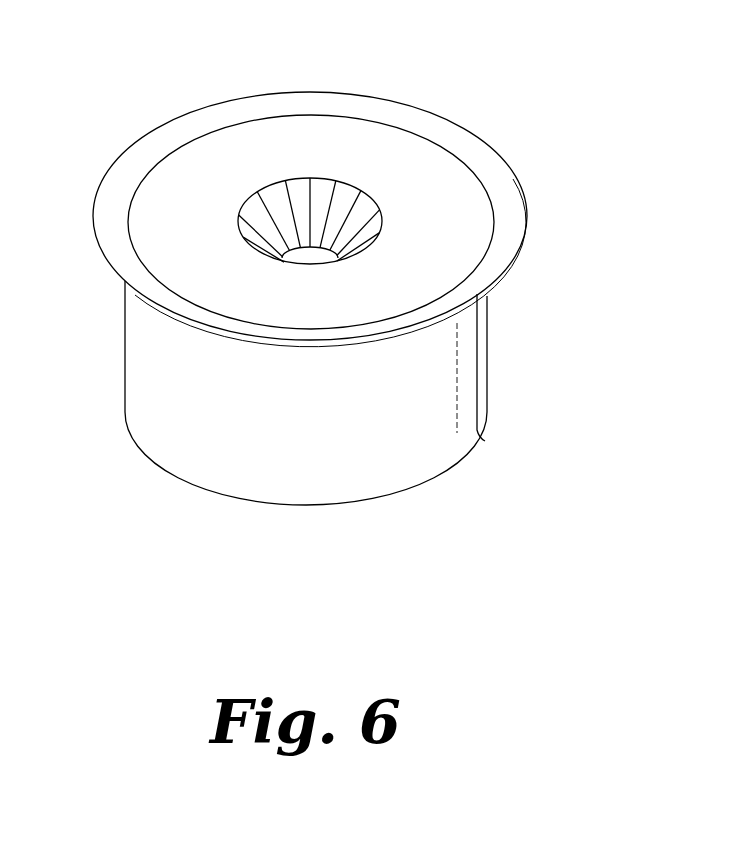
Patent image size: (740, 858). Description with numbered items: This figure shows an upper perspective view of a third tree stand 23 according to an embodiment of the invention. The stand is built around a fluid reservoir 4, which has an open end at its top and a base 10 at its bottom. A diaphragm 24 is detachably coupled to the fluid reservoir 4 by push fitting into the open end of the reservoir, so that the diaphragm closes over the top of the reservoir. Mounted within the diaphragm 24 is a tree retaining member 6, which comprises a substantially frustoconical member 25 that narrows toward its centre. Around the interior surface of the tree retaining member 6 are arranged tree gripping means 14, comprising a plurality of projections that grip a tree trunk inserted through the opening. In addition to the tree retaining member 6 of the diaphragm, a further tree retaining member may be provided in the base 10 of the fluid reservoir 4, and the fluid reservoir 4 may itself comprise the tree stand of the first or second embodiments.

The third tree stand 23 is at (500, 96).
The diaphragm 24 is at (173, 170).
The frustoconical member 25 is at (345, 195).
The tree gripping means 14 is at (313, 197).
The tree retaining member 6 is at (376, 222).
The fluid reservoir 4 is at (500, 404).
The base 10 is at (155, 457).